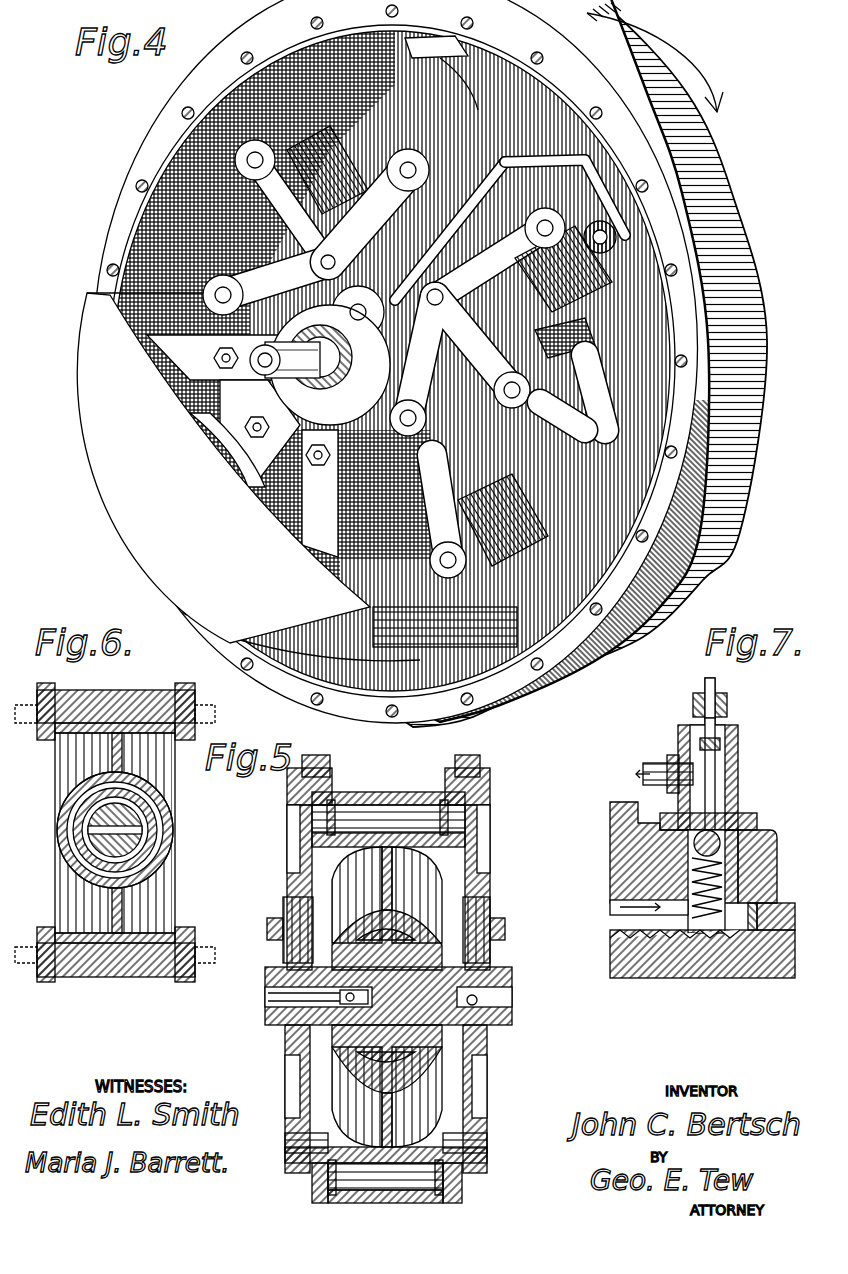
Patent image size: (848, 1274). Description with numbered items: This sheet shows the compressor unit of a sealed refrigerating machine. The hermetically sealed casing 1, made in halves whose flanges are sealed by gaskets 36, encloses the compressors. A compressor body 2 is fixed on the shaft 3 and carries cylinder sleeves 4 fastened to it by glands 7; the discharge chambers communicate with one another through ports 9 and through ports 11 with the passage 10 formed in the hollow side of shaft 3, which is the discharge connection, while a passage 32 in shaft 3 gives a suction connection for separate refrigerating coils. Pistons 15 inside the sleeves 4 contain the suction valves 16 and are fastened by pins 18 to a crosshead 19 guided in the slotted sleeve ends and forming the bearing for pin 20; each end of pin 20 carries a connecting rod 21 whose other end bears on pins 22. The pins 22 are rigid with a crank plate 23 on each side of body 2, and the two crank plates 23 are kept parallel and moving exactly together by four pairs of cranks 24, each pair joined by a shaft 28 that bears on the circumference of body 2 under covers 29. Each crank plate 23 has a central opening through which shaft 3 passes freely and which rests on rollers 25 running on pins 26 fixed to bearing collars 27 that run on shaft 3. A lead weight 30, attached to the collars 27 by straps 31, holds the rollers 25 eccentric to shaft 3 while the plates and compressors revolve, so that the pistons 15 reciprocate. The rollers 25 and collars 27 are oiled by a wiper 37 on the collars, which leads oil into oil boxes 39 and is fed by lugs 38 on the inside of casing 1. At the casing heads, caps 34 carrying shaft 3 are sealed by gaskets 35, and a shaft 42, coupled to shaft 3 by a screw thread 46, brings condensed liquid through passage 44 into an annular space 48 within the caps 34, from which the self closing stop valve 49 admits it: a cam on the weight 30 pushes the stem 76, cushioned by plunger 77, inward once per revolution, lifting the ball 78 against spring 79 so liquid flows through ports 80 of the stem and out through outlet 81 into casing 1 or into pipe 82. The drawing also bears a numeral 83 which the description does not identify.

In FIG. 4, the casing 1 is at (533, 363).
In FIG. 4, the compressor body 2 is at (553, 463).
In FIG. 6, the compressor body 2 is at (115, 833).
In FIG. 5, the compressor body 2 is at (513, 895).
In FIG. 4, the shaft 3 is at (250, 427).
In FIG. 5, the shaft 3 is at (268, 975).
In FIG. 7, the shaft 3 is at (770, 940).
In FIG. 4, the cylinder sleeves 4 is at (489, 516).
In FIG. 6, the cylinder sleeves 4 is at (158, 822).
In FIG. 4, the glands 7 is at (557, 320).
In FIG. 5, the ports 9 is at (385, 940).
In FIG. 4, the passage 10 is at (215, 392).
In FIG. 5, the passage 10 is at (278, 993).
In FIG. 5, the ports 11 is at (345, 993).
In FIG. 4, the pistons 15 is at (230, 440).
In FIG. 6, the pistons 15 is at (80, 830).
In FIG. 6, the suction valves 16 is at (165, 850).
In FIG. 6, the pins 18 is at (78, 848).
In FIG. 4, the crosshead 19 is at (600, 236).
In FIG. 4, the pin 20 is at (250, 160).
In FIG. 4, the connecting rod 21 is at (526, 260).
In FIG. 4, the pins 22 is at (321, 263).
In FIG. 4, the crank plate 23 is at (602, 322).
In FIG. 5, the crank plate 23 is at (290, 825).
In FIG. 4, the cranks 24 is at (595, 392).
In FIG. 6, the cranks 24 is at (42, 740).
In FIG. 5, the cranks 24 is at (330, 768).
In FIG. 5, the rollers 25 is at (290, 913).
In FIG. 4, the pins 26 is at (350, 312).
In FIG. 5, the pins 26 is at (283, 935).
In FIG. 4, the bearing collars 27 is at (320, 364).
In FIG. 6, the shaft 28 is at (150, 728).
In FIG. 5, the shaft 28 is at (480, 768).
In FIG. 4, the covers 29 is at (562, 416).
In FIG. 6, the covers 29 is at (135, 975).
In FIG. 5, the covers 29 is at (388, 818).
In FIG. 4, the weight 30 is at (223, 468).
In FIG. 4, the straps 31 is at (193, 348).
In FIG. 5, the passage 32 is at (478, 1003).
In FIG. 7, the caps 34 is at (722, 890).
In FIG. 7, the gaskets 35 is at (758, 905).
In FIG. 4, the gaskets 36 is at (660, 440).
In FIG. 4, the wiper 37 is at (565, 200).
In FIG. 4, the lugs 38 is at (357, 652).
In FIG. 4, the oil boxes 39 is at (460, 353).
In FIG. 7, the shaft 42 is at (672, 960).
In FIG. 7, the passage 44 is at (712, 960).
In FIG. 7, the screw thread 46 is at (640, 965).
In FIG. 7, the annular space 48 is at (755, 960).
In FIG. 7, the self closing stop valve 49 is at (722, 810).
In FIG. 7, the stem 76 is at (698, 712).
In FIG. 7, the plunger 77 is at (738, 730).
In FIG. 7, the ball 78 is at (755, 822).
In FIG. 7, the spring 79 is at (760, 850).
In FIG. 7, the ports 80 is at (738, 785).
In FIG. 7, the outlet 81 is at (665, 760).
In FIG. 4, the pipe 82 is at (470, 82).
In FIG. 4, the top piece 83 is at (440, 42).